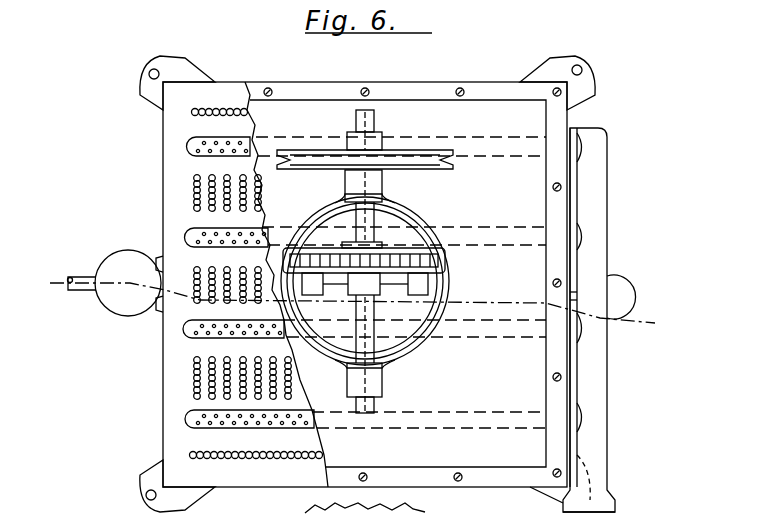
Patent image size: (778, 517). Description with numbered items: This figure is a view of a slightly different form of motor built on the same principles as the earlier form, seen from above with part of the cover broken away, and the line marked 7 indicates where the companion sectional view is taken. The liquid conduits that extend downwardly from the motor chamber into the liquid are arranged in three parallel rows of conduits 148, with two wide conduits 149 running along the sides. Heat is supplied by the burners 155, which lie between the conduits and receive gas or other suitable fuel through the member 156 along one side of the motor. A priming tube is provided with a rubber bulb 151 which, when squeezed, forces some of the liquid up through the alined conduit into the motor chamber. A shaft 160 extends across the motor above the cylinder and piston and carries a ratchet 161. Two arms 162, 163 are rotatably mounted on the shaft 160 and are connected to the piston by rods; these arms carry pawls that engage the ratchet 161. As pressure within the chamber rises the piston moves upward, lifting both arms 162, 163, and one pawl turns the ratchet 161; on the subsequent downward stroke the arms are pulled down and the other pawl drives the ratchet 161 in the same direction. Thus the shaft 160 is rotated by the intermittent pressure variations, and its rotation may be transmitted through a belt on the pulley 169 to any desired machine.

The section line 7- 7 is at (40, 283).
The conduits 148 is at (262, 266).
The wide conduits 149 is at (200, 109).
The rubber bulb 151 is at (634, 280).
The burners 155 is at (190, 153).
The member 156 is at (608, 444).
The shaft 160 is at (376, 121).
The ratchet 161 is at (440, 512).
The arm 162 is at (446, 264).
The arm 163 is at (300, 242).
The pulley 169 is at (432, 166).